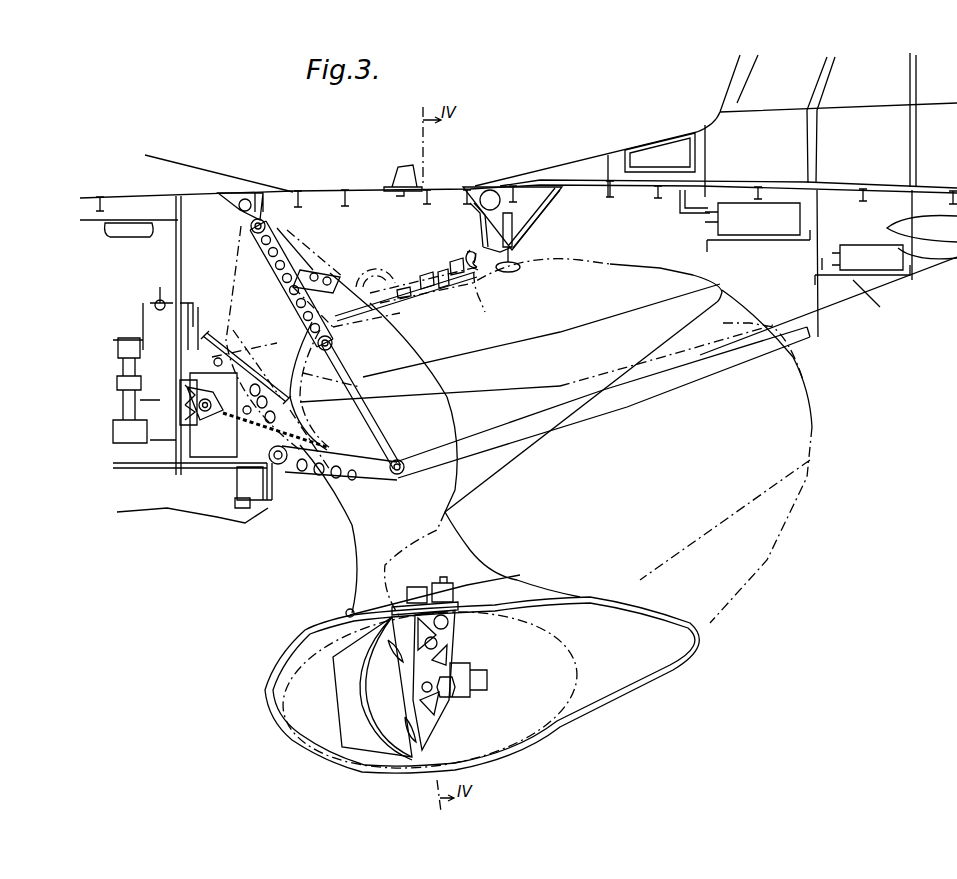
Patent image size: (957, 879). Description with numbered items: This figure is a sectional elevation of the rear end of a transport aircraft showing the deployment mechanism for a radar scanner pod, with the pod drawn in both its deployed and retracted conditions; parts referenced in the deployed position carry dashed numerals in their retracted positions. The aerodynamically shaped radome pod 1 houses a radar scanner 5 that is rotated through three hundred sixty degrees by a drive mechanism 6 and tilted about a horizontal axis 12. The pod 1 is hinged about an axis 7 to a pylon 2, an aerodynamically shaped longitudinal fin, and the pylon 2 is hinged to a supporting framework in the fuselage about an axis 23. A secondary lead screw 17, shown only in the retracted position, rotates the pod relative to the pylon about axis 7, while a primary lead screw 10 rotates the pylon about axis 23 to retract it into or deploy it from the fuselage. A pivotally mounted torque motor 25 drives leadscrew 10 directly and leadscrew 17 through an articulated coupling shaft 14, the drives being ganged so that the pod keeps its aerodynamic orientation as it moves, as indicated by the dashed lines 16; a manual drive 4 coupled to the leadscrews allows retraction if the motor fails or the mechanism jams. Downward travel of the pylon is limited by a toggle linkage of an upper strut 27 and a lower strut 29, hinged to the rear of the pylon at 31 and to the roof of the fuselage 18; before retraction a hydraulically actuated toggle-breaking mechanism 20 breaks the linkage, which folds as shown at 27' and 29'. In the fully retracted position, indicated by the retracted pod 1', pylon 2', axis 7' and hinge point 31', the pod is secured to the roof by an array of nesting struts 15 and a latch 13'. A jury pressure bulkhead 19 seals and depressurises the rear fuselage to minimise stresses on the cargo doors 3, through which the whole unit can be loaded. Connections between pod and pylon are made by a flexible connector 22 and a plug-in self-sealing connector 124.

The radome pod 1 is at (482, 680).
The radome pod (retracted position) 1' is at (541, 398).
The pylon 2 is at (440, 460).
The pylon (retracted position) 2' is at (251, 338).
The cargo doors 3 is at (676, 384).
The manual drive 4 is at (140, 370).
The radar scanner 5 is at (325, 688).
The drive mechanism 6 is at (437, 574).
The hinge axis (pod to pylon) 7 is at (339, 604).
The hinge axis (retracted position) 7' is at (403, 298).
The primary lead screw 10 is at (305, 428).
The horizontal axis 12 is at (462, 664).
The plug-in self-sealing connector 124 is at (180, 303).
The latch (retracted position) 13' is at (474, 237).
The articulated coupling shaft 14 is at (293, 313).
The nesting struts 15 is at (526, 206).
The dashed lines (pod orientation path) 16 is at (742, 381).
The secondary lead screw 17 is at (390, 273).
The roof of the fuselage 18 is at (265, 226).
The jury pressure bulkhead 19 is at (176, 250).
The toggle-breaking mechanism 20 is at (334, 339).
The flexible connector 22 is at (372, 268).
The hinge axis (pylon to fuselage) 23 is at (277, 473).
The torque motor 25 is at (207, 426).
The upper strut 27 is at (310, 258).
The upper strut (folded position) 27' is at (385, 279).
The lower strut 29 is at (361, 405).
The lower strut (folded position) 29' is at (298, 392).
The hinge point (toggle linkage to pylon) 31 is at (406, 455).
The hinge point (retracted position) 31' is at (246, 350).